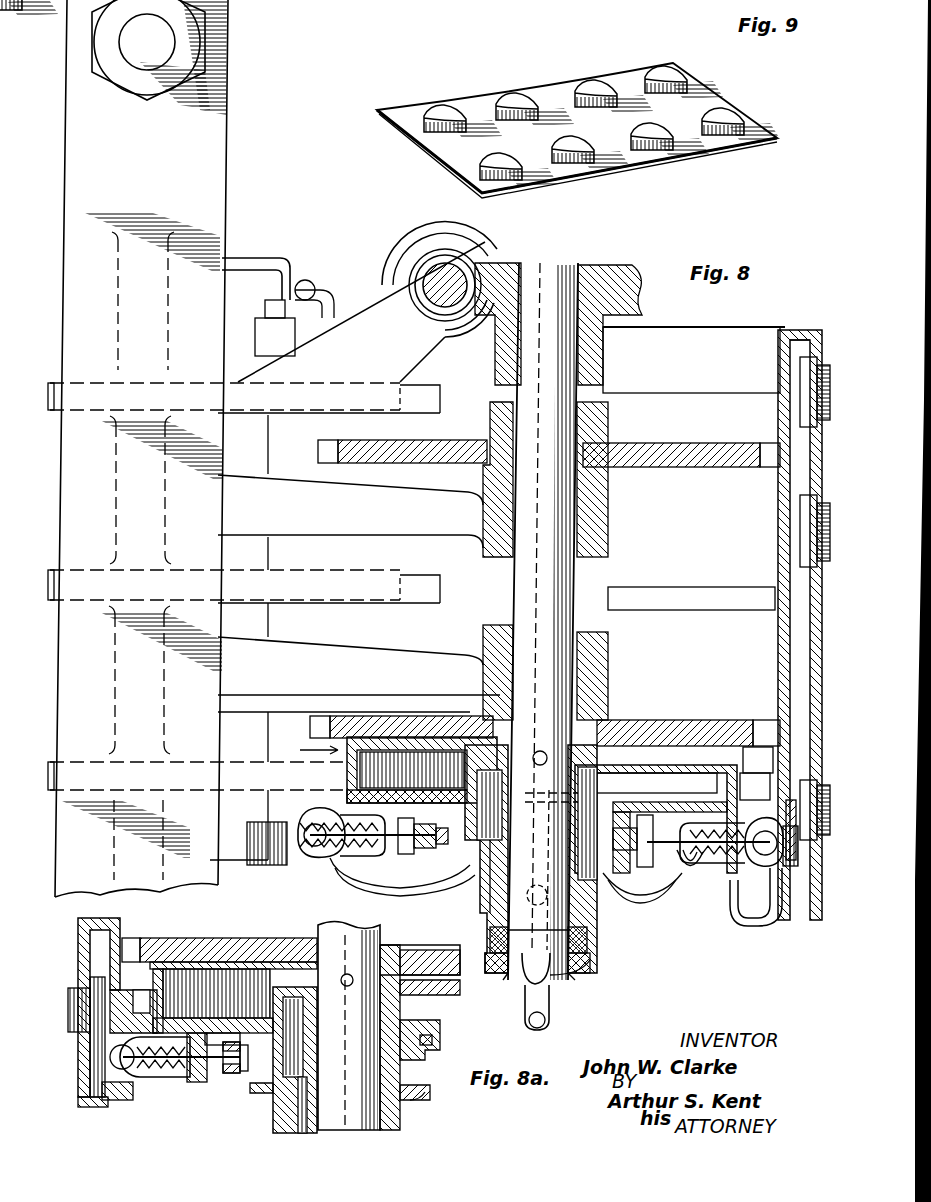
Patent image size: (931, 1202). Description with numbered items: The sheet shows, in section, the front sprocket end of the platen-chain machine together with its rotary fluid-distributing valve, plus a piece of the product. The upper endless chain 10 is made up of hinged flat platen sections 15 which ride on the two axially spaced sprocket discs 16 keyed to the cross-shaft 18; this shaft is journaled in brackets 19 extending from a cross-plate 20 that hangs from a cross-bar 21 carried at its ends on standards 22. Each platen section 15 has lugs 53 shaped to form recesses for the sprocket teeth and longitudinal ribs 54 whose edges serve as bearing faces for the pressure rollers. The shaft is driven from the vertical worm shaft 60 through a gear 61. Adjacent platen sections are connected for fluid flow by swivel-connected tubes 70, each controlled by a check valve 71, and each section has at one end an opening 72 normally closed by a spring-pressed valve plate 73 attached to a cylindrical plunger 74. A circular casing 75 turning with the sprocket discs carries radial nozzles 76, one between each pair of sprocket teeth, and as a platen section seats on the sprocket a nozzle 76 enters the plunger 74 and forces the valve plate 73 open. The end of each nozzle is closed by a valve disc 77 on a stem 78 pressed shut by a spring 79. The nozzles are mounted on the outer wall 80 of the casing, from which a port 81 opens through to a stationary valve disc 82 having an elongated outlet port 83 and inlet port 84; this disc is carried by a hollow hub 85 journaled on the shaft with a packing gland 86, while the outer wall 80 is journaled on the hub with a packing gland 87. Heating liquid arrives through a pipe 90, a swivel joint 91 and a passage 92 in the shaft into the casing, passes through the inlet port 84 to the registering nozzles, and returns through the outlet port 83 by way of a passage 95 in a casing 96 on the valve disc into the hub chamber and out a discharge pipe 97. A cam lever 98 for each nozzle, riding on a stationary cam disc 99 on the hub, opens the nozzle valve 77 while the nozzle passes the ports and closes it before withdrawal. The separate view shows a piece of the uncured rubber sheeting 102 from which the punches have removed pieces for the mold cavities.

In FIG. 8, the endless chain 10 is at (690, 324).
In FIG. 8, the platen section 15 is at (800, 327).
In FIG. 8A, the platen section 15 is at (82, 940).
In FIG. 8, the sprocket discs 16 is at (700, 462).
In FIG. 8, the cross-shaft 18 is at (560, 573).
In FIG. 8A, the cross-shaft 18 is at (349, 1026).
In FIG. 8, the brackets 19 is at (595, 520).
In FIG. 8, the cross-plate 20 is at (135, 270).
In FIG. 8, the cross-bar 21 is at (185, 145).
In FIG. 8, the standards 22 is at (162, 36).
In FIG. 8, the lugs 53 is at (767, 470).
In FIG. 8A, the lugs 53 is at (130, 936).
In FIG. 8, the ribs 54 is at (665, 395).
In FIG. 8, the vertical worm shaft 60 is at (455, 283).
In FIG. 8, the gears 61 is at (424, 238).
In FIG. 8, the swivel-connected tubes 70 is at (278, 253).
In FIG. 8, the check valve 71 is at (310, 280).
In FIG. 8, the opening 72 is at (790, 840).
In FIG. 8, the valve plate 73 is at (796, 860).
In FIG. 8, the plunger 74 is at (748, 866).
In FIG. 8, the circular casing 75 is at (305, 745).
In FIG. 8A, the circular casing 75 is at (250, 1015).
In FIG. 8, the nozzles 76 is at (340, 862).
In FIG. 8A, the nozzles 76 is at (140, 1080).
In FIG. 8, the valve disc 77 is at (300, 855).
In FIG. 8A, the valve disc 77 is at (110, 1057).
In FIG. 8, the stem 78 is at (408, 858).
In FIG. 8A, the stem 78 is at (208, 1082).
In FIG. 8, the spring 79 is at (360, 860).
In FIG. 8A, the spring 79 is at (175, 1080).
In FIG. 8, the outer wall 80 is at (702, 758).
In FIG. 8, the port 81 is at (760, 775).
In FIG. 8, the stationary valve disc 82 is at (648, 760).
In FIG. 8A, the stationary valve disc 82 is at (215, 1010).
In FIG. 8, the outlet port 83 is at (730, 740).
In FIG. 8, the inlet port 84 is at (535, 745).
In FIG. 8A, the inlet port 84 is at (195, 962).
In FIG. 8, the hollow hub 85 is at (480, 885).
In FIG. 8A, the hollow hub 85 is at (402, 1122).
In FIG. 8, the packing gland 86 is at (588, 945).
In FIG. 8, the packing gland 87 is at (455, 860).
In FIG. 8A, the packing gland 87 is at (435, 1045).
In FIG. 8, the pipe 90 is at (552, 1005).
In FIG. 8, the swivel joint 91 is at (515, 985).
In FIG. 8, the passage 92 is at (484, 930).
In FIG. 8A, the passage 92 is at (280, 1112).
In FIG. 8, the passage 95 is at (618, 735).
In FIG. 8, the casing 96 is at (450, 735).
In FIG. 8A, the casing 96 is at (295, 992).
In FIG. 8, the discharge pipe 97 is at (612, 885).
In FIG. 8, the cam lever 98 is at (440, 848).
In FIG. 8A, the cam lever 98 is at (240, 1073).
In FIG. 8, the cam disc 99 is at (590, 960).
In FIG. 8A, the cam disc 99 is at (425, 1098).
In FIG. 9, the uncured rubber sheeting 102 is at (625, 158).